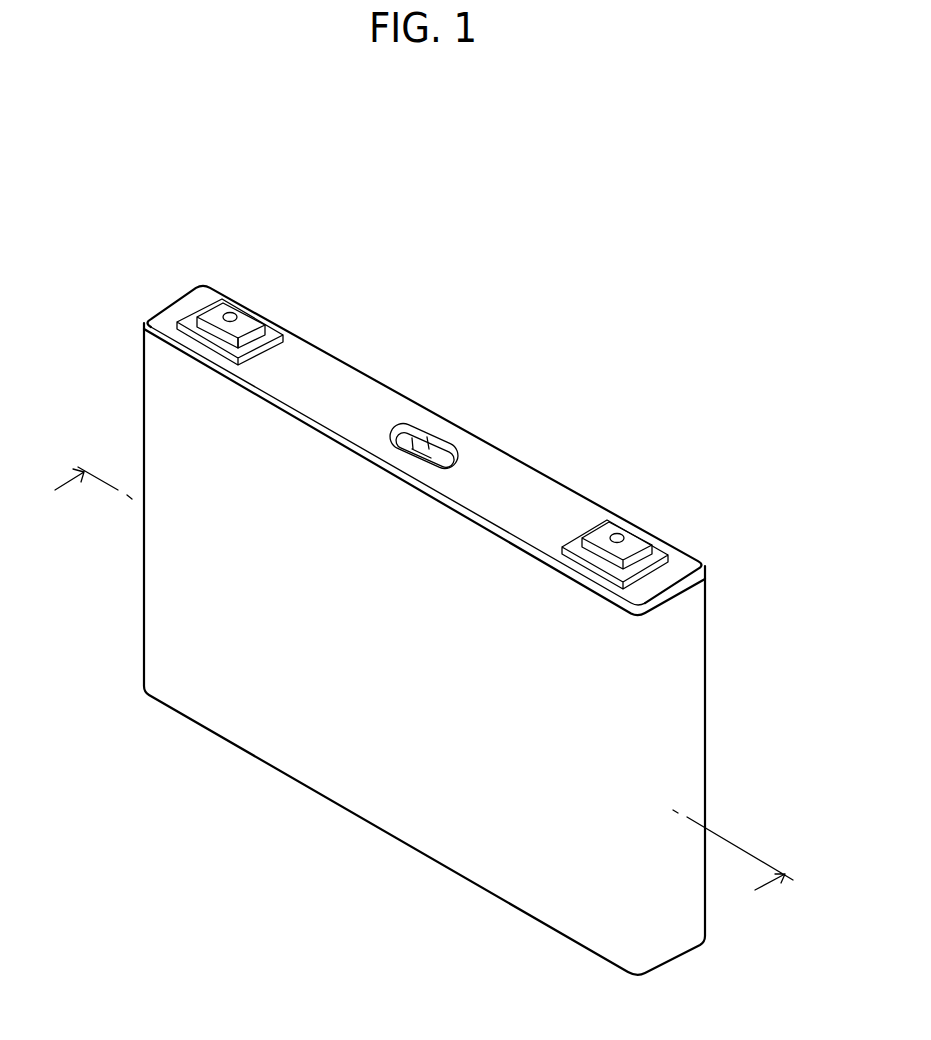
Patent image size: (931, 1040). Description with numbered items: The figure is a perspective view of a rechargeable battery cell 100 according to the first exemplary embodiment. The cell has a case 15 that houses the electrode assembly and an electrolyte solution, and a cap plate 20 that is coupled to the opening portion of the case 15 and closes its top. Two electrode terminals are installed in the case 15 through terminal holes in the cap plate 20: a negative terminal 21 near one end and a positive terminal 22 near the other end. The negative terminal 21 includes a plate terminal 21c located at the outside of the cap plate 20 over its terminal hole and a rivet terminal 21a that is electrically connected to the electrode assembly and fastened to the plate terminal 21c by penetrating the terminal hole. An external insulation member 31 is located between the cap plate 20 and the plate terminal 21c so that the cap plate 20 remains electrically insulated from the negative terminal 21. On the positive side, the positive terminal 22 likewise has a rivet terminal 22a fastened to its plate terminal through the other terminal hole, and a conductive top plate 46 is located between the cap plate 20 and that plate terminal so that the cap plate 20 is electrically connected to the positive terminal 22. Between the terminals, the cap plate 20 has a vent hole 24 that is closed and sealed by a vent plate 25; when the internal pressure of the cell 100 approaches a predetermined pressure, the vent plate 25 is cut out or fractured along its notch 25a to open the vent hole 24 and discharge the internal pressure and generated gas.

The rechargeable battery cell 100 is at (487, 203).
The case 15 is at (360, 783).
The cap plate 20 is at (322, 367).
The negative terminal 21 is at (221, 286).
The rivet terminal 21a is at (232, 313).
The plate terminal 21c is at (253, 320).
The external insulation member 31 is at (185, 318).
The positive terminal 22 is at (662, 498).
The rivet terminal 22a is at (618, 536).
The conductive top plate 46 is at (664, 555).
The vent hole 24 is at (408, 432).
The vent plate 25 is at (423, 443).
The notch 25a is at (430, 453).